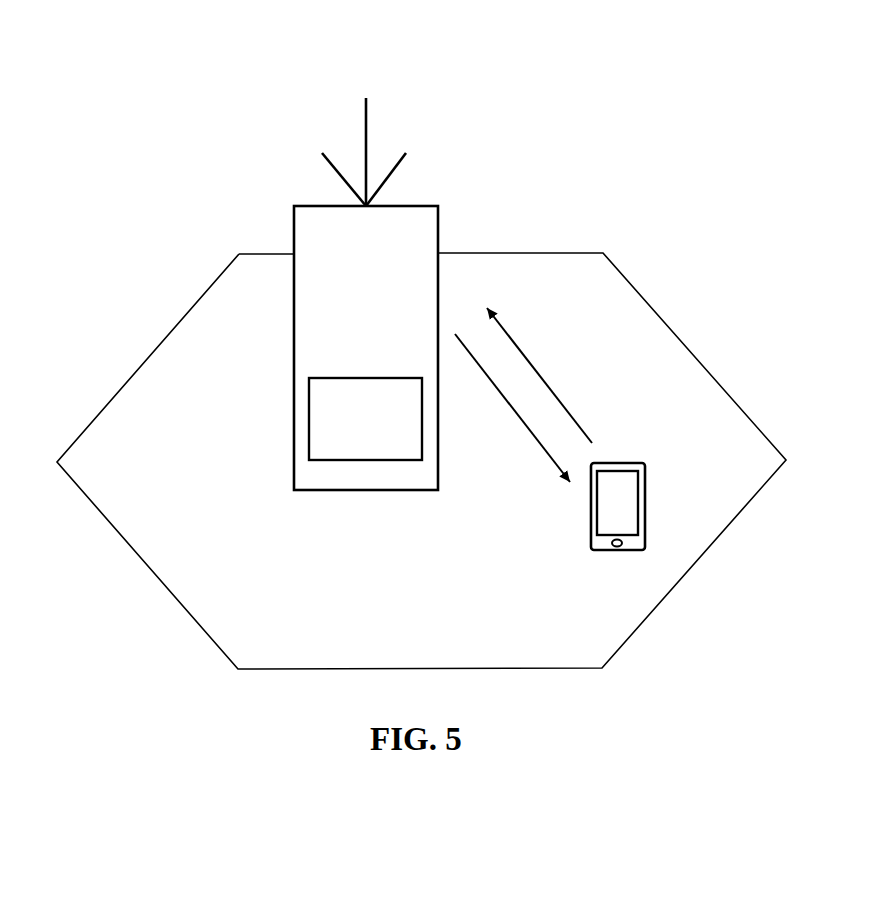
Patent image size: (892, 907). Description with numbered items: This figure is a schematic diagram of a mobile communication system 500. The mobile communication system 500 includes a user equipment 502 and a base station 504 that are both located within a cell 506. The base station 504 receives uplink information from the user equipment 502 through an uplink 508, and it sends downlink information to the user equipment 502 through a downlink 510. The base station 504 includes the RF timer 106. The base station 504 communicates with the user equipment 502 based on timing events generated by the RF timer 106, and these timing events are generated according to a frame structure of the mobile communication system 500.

The mobile communication system 500 is at (663, 230).
The user equipment 502 is at (547, 253).
The base station 504 is at (610, 552).
The cell 506 is at (294, 232).
The uplink 508 is at (512, 405).
The downlink 510 is at (582, 427).
The RF timer 106 is at (378, 378).